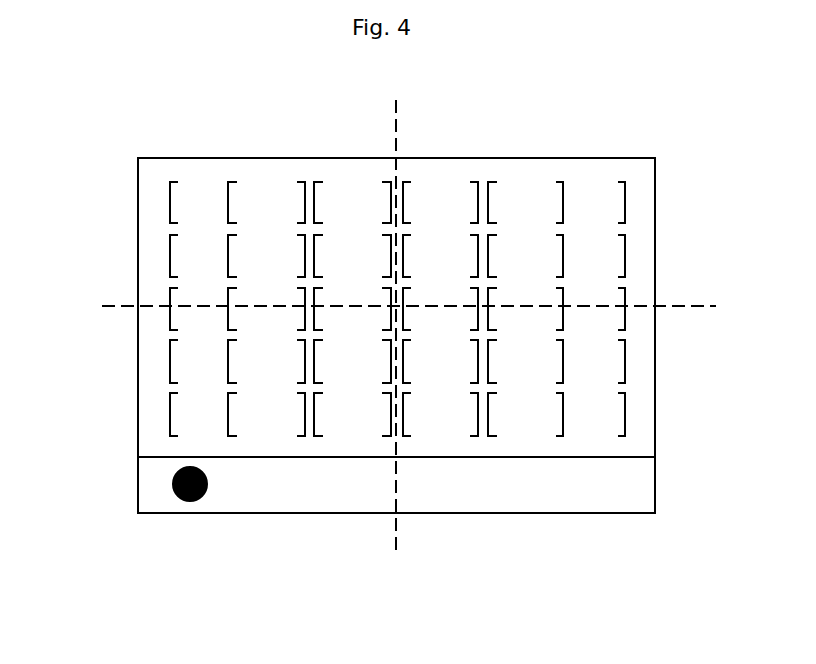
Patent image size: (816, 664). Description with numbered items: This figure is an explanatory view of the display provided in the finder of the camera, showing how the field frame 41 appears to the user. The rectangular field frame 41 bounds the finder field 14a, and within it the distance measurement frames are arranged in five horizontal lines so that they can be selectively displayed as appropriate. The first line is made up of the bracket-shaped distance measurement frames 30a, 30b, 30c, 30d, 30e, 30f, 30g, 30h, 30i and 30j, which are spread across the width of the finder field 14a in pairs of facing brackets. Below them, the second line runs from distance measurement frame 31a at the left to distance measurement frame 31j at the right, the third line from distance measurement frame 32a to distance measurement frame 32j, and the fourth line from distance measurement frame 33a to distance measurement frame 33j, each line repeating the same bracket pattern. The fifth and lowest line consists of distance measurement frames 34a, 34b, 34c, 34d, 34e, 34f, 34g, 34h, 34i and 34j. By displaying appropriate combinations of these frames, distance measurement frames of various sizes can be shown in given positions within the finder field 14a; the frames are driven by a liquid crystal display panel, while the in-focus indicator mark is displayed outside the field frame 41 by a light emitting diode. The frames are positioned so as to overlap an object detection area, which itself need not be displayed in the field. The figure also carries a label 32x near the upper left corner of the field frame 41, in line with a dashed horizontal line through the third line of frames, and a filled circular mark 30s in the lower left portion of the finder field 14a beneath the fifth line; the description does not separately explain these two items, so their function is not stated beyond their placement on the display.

The finder field 14a is at (597, 160).
The field frame 41 is at (150, 168).
The row line 32x is at (140, 166).
The distance measurement frame 30a is at (170, 205).
The distance measurement frame 30b is at (227, 200).
The distance measurement frame 30c is at (297, 200).
The distance measurement frame 30d is at (323, 200).
The distance measurement frame 30e is at (382, 200).
The distance measurement frame 30f is at (411, 200).
The distance measurement frame 30g is at (470, 200).
The distance measurement frame 30h is at (497, 200).
The distance measurement frame 30i is at (556, 205).
The distance measurement frame 30j is at (627, 203).
The distance measurement frame 31a is at (170, 252).
The distance measurement frame 31j is at (627, 252).
The distance measurement frame 32a is at (170, 318).
The distance measurement frame 32j is at (627, 297).
The distance measurement frame 33a is at (170, 360).
The distance measurement frame 33j is at (627, 368).
The distance measurement frame 34a is at (170, 412).
The distance measurement frame 34b is at (237, 417).
The distance measurement frame 34c is at (297, 415).
The distance measurement frame 34d is at (323, 415).
The distance measurement frame 34e is at (382, 415).
The distance measurement frame 34f is at (411, 417).
The distance measurement frame 34g is at (470, 417).
The distance measurement frame 34h is at (497, 417).
The distance measurement frame 34i is at (556, 417).
The distance measurement frame 34j is at (627, 422).
The alignment mark 30s is at (173, 486).